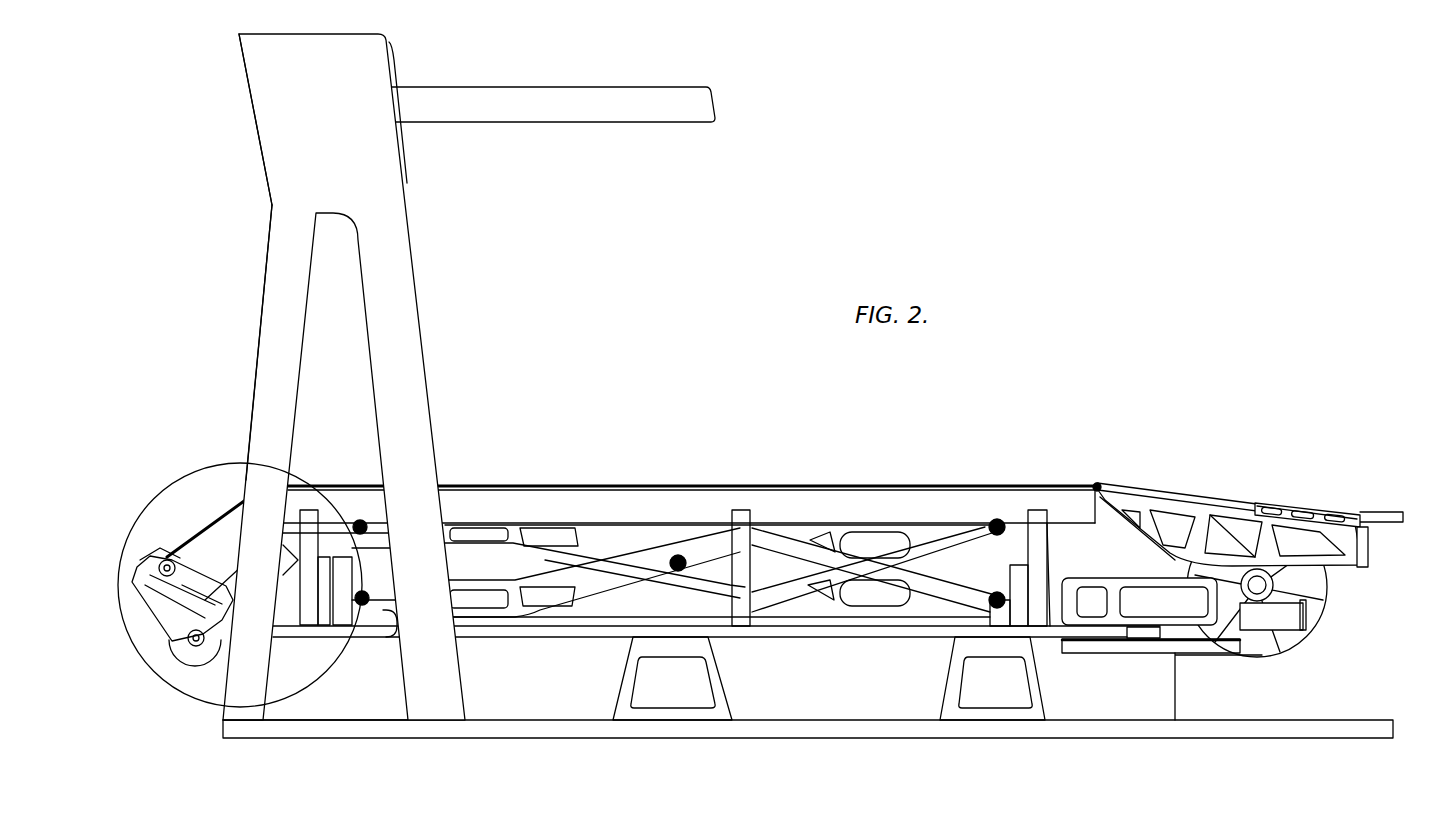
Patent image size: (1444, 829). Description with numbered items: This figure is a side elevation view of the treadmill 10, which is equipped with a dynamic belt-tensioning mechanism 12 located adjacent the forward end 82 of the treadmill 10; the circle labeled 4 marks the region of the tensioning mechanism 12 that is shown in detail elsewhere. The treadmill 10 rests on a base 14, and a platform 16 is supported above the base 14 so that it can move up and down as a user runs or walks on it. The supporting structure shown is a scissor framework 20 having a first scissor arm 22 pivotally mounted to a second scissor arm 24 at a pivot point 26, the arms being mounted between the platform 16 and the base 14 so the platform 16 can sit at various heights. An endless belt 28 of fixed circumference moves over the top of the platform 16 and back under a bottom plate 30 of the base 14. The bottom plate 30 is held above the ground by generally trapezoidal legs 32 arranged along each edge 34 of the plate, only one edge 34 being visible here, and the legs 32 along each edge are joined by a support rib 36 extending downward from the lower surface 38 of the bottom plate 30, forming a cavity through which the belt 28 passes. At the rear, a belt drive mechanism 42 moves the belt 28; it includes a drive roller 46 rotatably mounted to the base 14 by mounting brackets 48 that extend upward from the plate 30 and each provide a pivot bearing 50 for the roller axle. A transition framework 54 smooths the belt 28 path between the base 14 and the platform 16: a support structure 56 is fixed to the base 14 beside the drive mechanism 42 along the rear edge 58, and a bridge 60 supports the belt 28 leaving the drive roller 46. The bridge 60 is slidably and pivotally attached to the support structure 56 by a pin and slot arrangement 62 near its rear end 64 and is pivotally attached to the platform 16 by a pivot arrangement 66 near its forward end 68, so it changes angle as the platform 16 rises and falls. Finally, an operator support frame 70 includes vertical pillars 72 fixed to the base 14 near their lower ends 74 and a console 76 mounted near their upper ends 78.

The detail view circle 4 is at (178, 478).
The treadmill 10 is at (757, 350).
The dynamic belt-tensioning mechanism 12 is at (136, 653).
The base 14 is at (1178, 693).
The platform 16 is at (892, 482).
The scissor framework 20 is at (800, 618).
The first scissor arm 22 is at (792, 522).
The second scissor arm 24 is at (860, 620).
The pivot point 26 is at (677, 558).
The belt 28 is at (712, 482).
The bottom plate 30 is at (540, 639).
The legs 32 is at (662, 721).
The edge 34 is at (497, 638).
The support rib 36 is at (605, 697).
The lower surface 38 is at (285, 634).
The belt drive mechanism 42 is at (1352, 604).
The drive roller 46 is at (1324, 576).
The mounting brackets 48 is at (1256, 652).
The pivot bearing 50 is at (1306, 614).
The transition framework 54 is at (1257, 486).
The support structure 56 is at (1371, 548).
The rear edge 58 is at (1310, 624).
The bridge 60 is at (1168, 526).
The pin and slot arrangement 62 is at (1290, 509).
The rear end 64 is at (1331, 520).
The pivot arrangement 66 is at (1095, 482).
The forward end 68 is at (1115, 490).
The operator support frame 70 is at (441, 386).
The pillars 72 is at (428, 350).
The lower ends 74 is at (222, 716).
The console 76 is at (258, 92).
The upper ends 78 is at (280, 206).
The forward end 82 is at (154, 503).